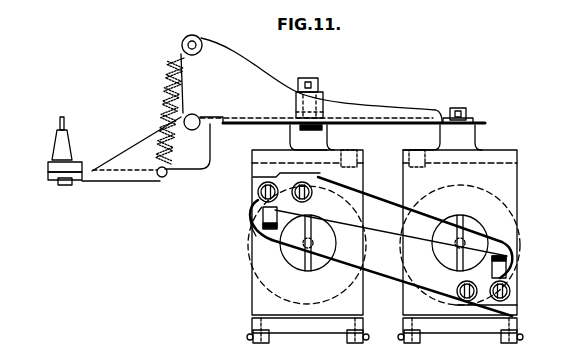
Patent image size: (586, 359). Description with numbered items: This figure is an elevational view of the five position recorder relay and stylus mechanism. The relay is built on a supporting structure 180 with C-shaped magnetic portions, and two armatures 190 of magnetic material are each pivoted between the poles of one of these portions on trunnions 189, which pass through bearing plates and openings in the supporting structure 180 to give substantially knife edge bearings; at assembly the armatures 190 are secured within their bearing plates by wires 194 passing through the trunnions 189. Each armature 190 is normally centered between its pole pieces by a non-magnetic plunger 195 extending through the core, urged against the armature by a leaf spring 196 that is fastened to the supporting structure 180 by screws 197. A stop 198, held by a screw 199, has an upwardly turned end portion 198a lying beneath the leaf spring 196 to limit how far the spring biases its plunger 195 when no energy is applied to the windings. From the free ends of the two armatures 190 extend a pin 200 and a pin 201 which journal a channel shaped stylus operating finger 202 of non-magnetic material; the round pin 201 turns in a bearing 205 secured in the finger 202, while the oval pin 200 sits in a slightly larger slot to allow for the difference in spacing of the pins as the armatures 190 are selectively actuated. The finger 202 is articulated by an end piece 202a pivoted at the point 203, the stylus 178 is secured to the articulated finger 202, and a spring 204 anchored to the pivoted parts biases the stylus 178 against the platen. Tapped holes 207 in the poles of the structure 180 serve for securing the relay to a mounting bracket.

The stylus 178 is at (59, 123).
The supporting structure 180 is at (508, 174).
The trunnions 189 is at (256, 341).
The armatures 190 is at (483, 138).
The wires 194 is at (303, 334).
The plungers 195 is at (283, 250).
The leaf springs 196 is at (380, 207).
The screws 197 is at (253, 176).
The stop 198 is at (262, 213).
The upwardly turned end portion 198a is at (253, 230).
The screw 199 is at (258, 194).
The pin 200 is at (467, 110).
The pin 201 is at (318, 84).
The stylus operating finger 202 is at (224, 57).
The end piece 202a is at (137, 147).
The pivot point 203 is at (208, 128).
The spring 204 is at (174, 108).
The bearing 205 is at (323, 98).
The tapped holes 207 is at (413, 158).